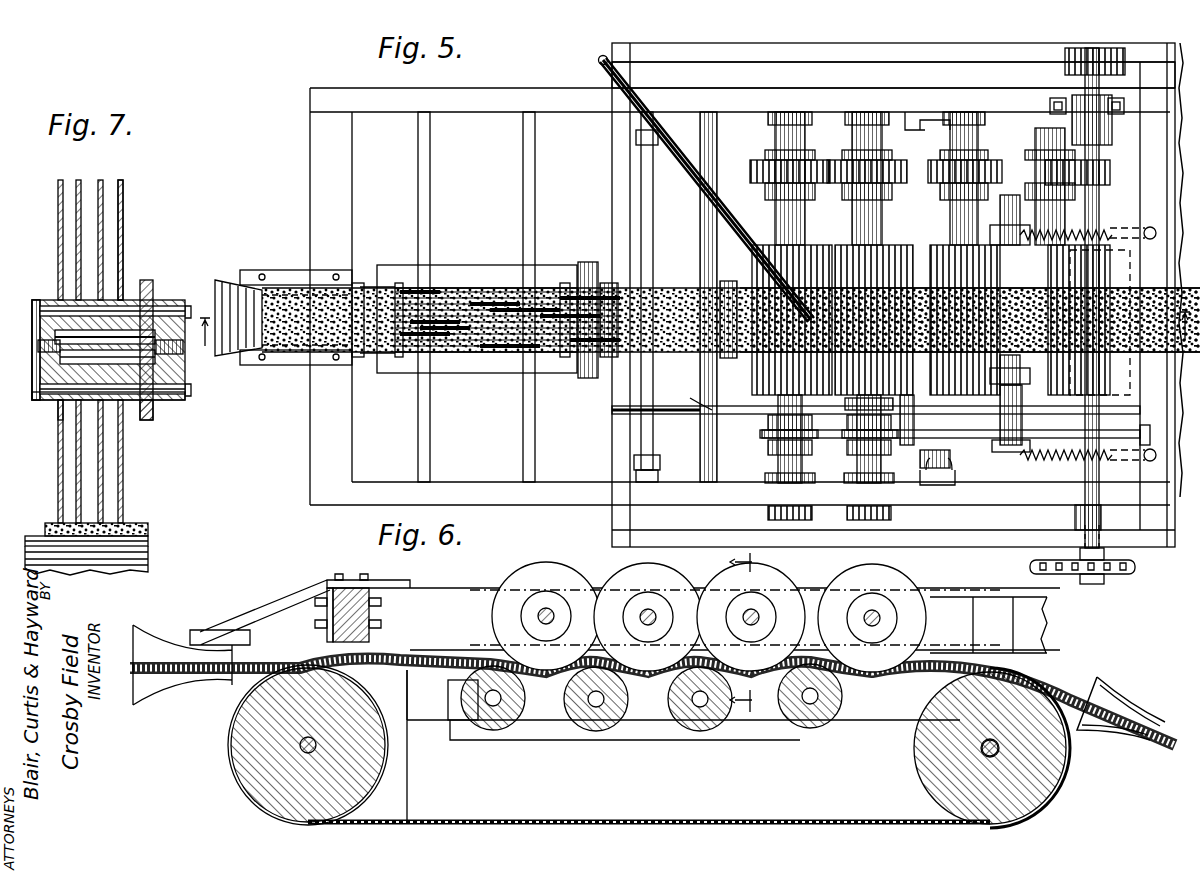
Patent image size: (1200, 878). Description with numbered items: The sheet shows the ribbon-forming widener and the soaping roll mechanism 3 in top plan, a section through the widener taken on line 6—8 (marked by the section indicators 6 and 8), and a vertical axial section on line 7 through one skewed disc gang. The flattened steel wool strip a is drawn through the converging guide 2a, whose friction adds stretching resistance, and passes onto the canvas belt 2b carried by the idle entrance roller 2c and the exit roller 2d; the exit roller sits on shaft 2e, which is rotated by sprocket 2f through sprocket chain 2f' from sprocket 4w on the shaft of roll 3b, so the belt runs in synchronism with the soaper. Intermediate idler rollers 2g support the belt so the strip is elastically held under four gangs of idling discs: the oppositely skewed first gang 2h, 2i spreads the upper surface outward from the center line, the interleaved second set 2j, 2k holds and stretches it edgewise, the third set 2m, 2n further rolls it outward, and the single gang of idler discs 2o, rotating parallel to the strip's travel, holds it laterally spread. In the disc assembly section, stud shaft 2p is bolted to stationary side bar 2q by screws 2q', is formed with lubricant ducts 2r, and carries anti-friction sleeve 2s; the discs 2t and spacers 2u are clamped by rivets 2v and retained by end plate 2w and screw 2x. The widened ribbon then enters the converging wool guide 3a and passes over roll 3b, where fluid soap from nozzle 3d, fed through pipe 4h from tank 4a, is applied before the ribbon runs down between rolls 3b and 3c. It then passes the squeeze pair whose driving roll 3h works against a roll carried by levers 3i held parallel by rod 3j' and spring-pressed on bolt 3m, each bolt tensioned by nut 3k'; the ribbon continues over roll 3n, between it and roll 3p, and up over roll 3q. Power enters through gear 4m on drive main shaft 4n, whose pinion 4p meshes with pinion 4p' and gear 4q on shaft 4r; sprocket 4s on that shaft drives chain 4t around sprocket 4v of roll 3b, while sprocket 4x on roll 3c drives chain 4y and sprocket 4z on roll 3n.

In FIG. 5, the material strip a is at (285, 300).
In FIG. 6, the material strip a is at (258, 660).
In FIG. 7, the material strip a is at (122, 526).
In FIG. 5, the converging guide 2a is at (236, 288).
In FIG. 6, the converging guide 2a is at (156, 634).
In FIG. 6, the canvas belt 2b is at (424, 676).
In FIG. 7, the canvas belt 2b is at (145, 538).
In FIG. 6, the idle entrance roller 2c is at (232, 743).
In FIG. 7, the idle entrance roller 2c is at (150, 562).
In FIG. 5, the exit roller 2d is at (702, 290).
In FIG. 6, the exit roller 2d is at (918, 750).
In FIG. 5, the shaft 2e is at (653, 440).
In FIG. 6, the shaft 2e is at (998, 750).
In FIG. 5, the sprocket 2f is at (656, 394).
In FIG. 5, the sprocket chain 2f' is at (684, 383).
In FIG. 5, the intermediate idler rollers 2g is at (364, 290).
In FIG. 6, the intermediate idler rollers 2g is at (580, 728).
In FIG. 5, the first-gang discs 2h is at (398, 290).
In FIG. 6, the first-gang discs 2h is at (548, 570).
In FIG. 5, the first-gang discs 2i is at (397, 358).
In FIG. 5, the second-set discs 2j is at (455, 290).
In FIG. 6, the second-set discs 2j is at (622, 575).
In FIG. 5, the second-set discs 2k is at (457, 352).
In FIG. 5, the third-set discs 2m is at (553, 290).
In FIG. 6, the third-set discs 2m is at (718, 580).
In FIG. 7, the third-set discs 2m is at (124, 232).
In FIG. 5, the third-set discs 2n is at (550, 355).
In FIG. 5, the single gang of idler discs 2o is at (606, 290).
In FIG. 6, the single gang of idler discs 2o is at (898, 584).
In FIG. 7, the stud shaft 2p is at (185, 374).
In FIG. 5, the stationary side bar 2q is at (363, 339).
In FIG. 7, the stationary side bar 2q is at (152, 427).
In FIG. 7, the screws 2q' is at (191, 337).
In FIG. 7, the lubricant ducts 2r is at (142, 300).
In FIG. 7, the anti-friction metal sleeve 2s is at (46, 302).
In FIG. 7, the discs 2t is at (82, 200).
In FIG. 7, the intermediate spacers 2u is at (84, 300).
In FIG. 7, the rivets 2v is at (58, 414).
In FIG. 6, the end plate 2w is at (535, 622).
In FIG. 7, the end plate 2w is at (58, 400).
In FIG. 6, the screw 2x is at (535, 610).
In FIG. 7, the screw 2x is at (36, 346).
In FIG. 5, the roll mechanism (soaper) 3 is at (708, 82).
In FIG. 5, the converging wool guide 3a is at (728, 285).
In FIG. 6, the converging wool guide 3a is at (1112, 698).
In FIG. 5, the roll 3b is at (765, 258).
In FIG. 5, the roll 3c is at (895, 258).
In FIG. 5, the nozzle 3d is at (826, 316).
In FIG. 5, the driving squeeze roll 3h is at (1100, 388).
In FIG. 5, the levers 3i is at (988, 238).
In FIG. 5, the rod 3j' is at (913, 410).
In FIG. 5, the nut 3k' is at (1136, 344).
In FIG. 5, the bolt 3m is at (1100, 232).
In FIG. 5, the roll 3n is at (1024, 428).
In FIG. 5, the roll 3p is at (945, 260).
In FIG. 5, the roll 3q is at (1110, 322).
In FIG. 5, the tank 4a is at (758, 76).
In FIG. 5, the pipe 4h is at (601, 75).
In FIG. 5, the gear 4m is at (1122, 72).
In FIG. 5, the drive main shaft 4n is at (1104, 134).
In FIG. 5, the pinion 4p is at (1094, 166).
In FIG. 5, the pinion 4p' is at (1037, 184).
In FIG. 5, the gear 4q is at (1045, 172).
In FIG. 5, the shaft 4r is at (1101, 528).
In FIG. 5, the sprocket 4s is at (950, 426).
In FIG. 5, the sprocket chain 4t is at (836, 440).
In FIG. 5, the sprocket 4v is at (764, 444).
In FIG. 5, the sprocket 4w is at (765, 408).
In FIG. 5, the sprocket 4x is at (854, 402).
In FIG. 5, the chain 4y is at (1118, 568).
In FIG. 5, the sprocket 4z is at (1150, 432).
In FIG. 5, the section line 6—8 6 is at (204, 344).
In FIG. 7, the section line 6—8 6 is at (203, 344).
In FIG. 6, the section line 7— 7 is at (753, 642).
In FIG. 5, the section line 6— 8 is at (961, 343).